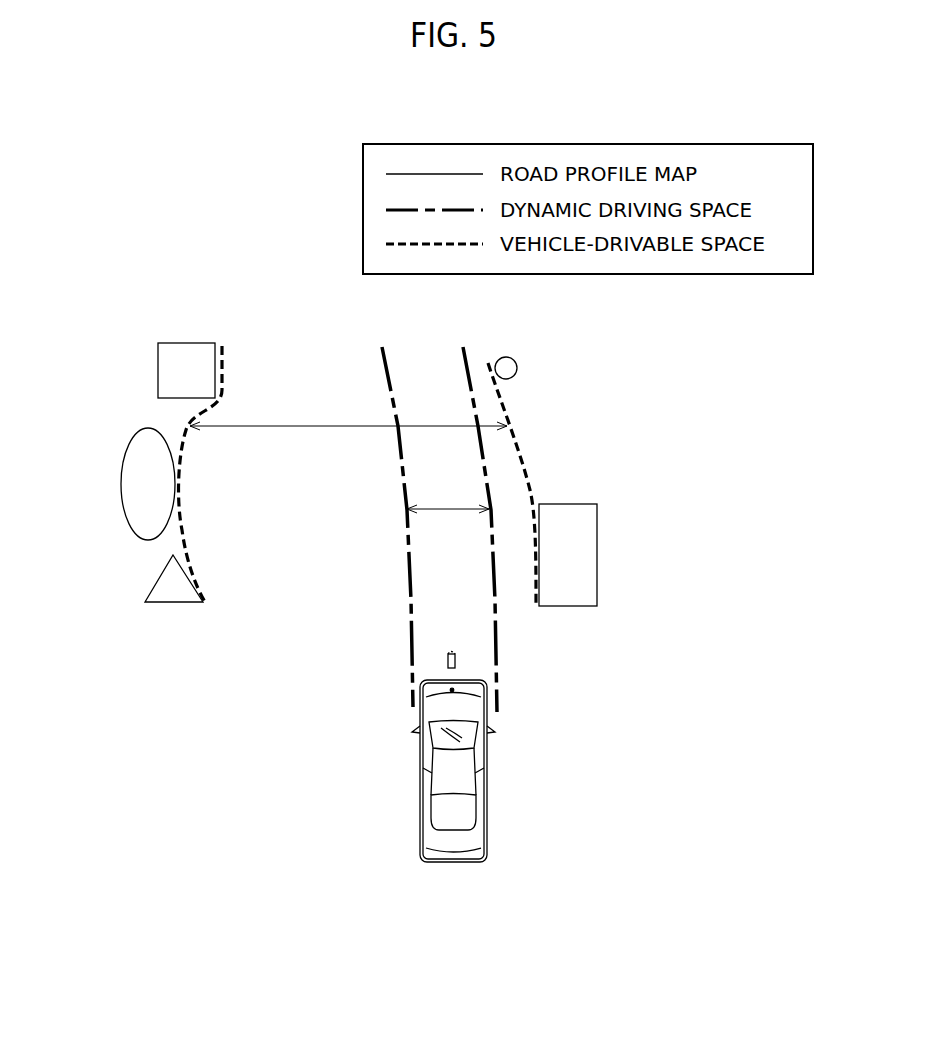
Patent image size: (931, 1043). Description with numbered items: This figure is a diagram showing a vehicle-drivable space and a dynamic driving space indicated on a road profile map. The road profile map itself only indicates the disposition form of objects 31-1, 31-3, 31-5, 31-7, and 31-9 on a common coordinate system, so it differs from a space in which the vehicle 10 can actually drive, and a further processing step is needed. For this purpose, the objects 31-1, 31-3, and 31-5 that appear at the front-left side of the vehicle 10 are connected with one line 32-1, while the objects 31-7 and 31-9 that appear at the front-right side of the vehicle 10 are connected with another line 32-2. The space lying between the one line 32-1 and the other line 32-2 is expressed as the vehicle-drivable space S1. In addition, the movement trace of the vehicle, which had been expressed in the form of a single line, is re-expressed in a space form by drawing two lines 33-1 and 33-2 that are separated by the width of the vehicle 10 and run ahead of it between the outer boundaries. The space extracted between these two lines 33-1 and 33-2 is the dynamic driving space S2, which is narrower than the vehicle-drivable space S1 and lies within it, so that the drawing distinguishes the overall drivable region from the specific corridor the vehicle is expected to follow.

The vehicle 10 is at (418, 848).
The object 31-1 is at (186, 340).
The object 31-3 is at (120, 480).
The object 31-5 is at (172, 606).
The object 31-7 is at (518, 366).
The object 31-9 is at (597, 515).
The one line 32-1 is at (226, 366).
The another line 32-2 is at (518, 445).
The line of movement trace 33-1 is at (408, 672).
The line of movement trace 33-2 is at (530, 665).
The vehicle-drivable space S1 is at (352, 424).
The dynamic driving space S2 is at (451, 505).